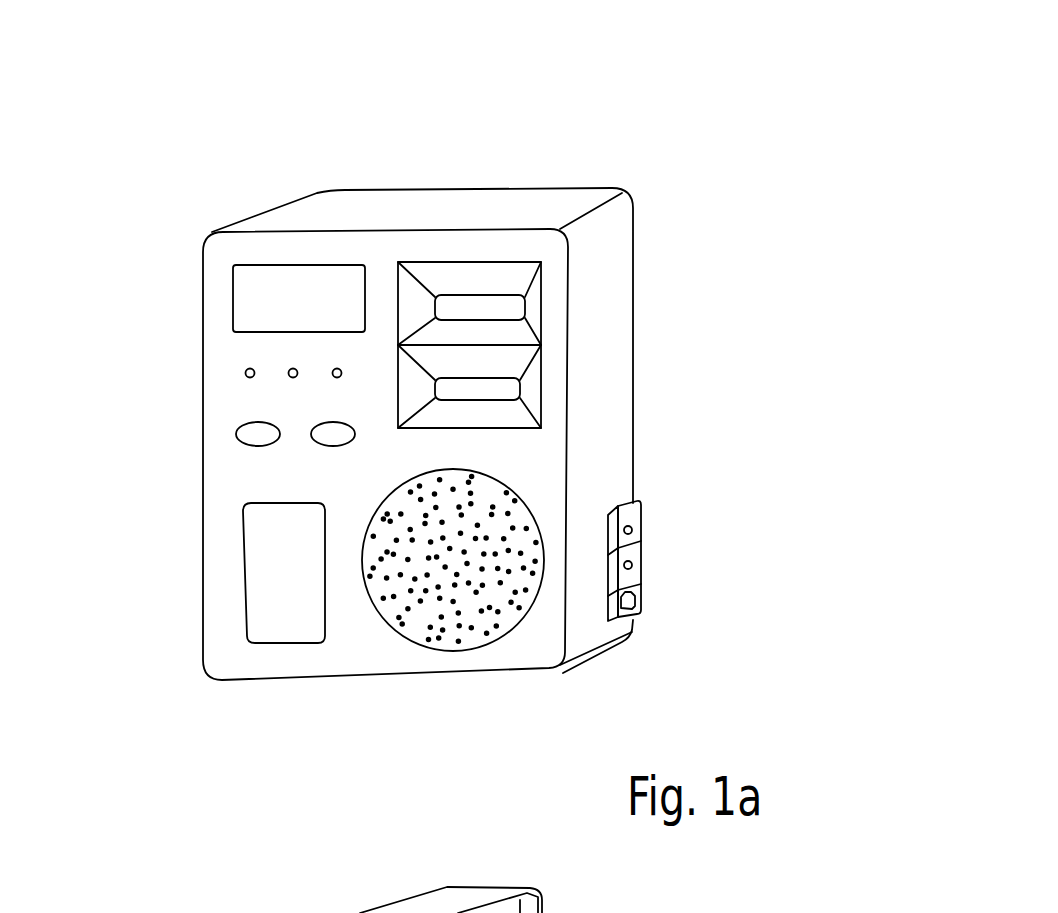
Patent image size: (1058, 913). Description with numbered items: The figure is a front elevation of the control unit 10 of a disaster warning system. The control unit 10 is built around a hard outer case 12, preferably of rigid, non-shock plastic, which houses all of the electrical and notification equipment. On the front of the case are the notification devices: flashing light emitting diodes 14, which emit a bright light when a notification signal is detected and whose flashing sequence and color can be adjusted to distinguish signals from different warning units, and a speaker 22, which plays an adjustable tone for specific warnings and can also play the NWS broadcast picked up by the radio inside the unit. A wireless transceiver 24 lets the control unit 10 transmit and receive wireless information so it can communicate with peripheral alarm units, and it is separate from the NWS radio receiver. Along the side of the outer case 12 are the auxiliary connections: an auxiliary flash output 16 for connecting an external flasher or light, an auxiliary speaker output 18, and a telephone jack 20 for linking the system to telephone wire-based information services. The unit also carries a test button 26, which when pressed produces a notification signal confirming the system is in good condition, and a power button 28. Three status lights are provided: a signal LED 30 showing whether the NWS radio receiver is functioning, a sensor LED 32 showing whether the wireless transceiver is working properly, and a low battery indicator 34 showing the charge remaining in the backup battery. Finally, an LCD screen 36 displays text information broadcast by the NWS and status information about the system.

The control unit 10 is at (664, 95).
The outer case 12 is at (595, 340).
The light emitting diodes 14 is at (505, 305).
The auxiliary flash output 16 is at (647, 525).
The auxiliary speaker output 18 is at (647, 567).
The telephone jack 20 is at (649, 598).
The speaker 22 is at (448, 658).
The wireless transceiver 24 is at (265, 618).
The test button 26 is at (332, 432).
The power button 28 is at (258, 433).
The signal LED 30 is at (238, 367).
The sensor LED 32 is at (290, 358).
The low battery indicator 34 is at (337, 357).
The LCD screen 36 is at (332, 280).